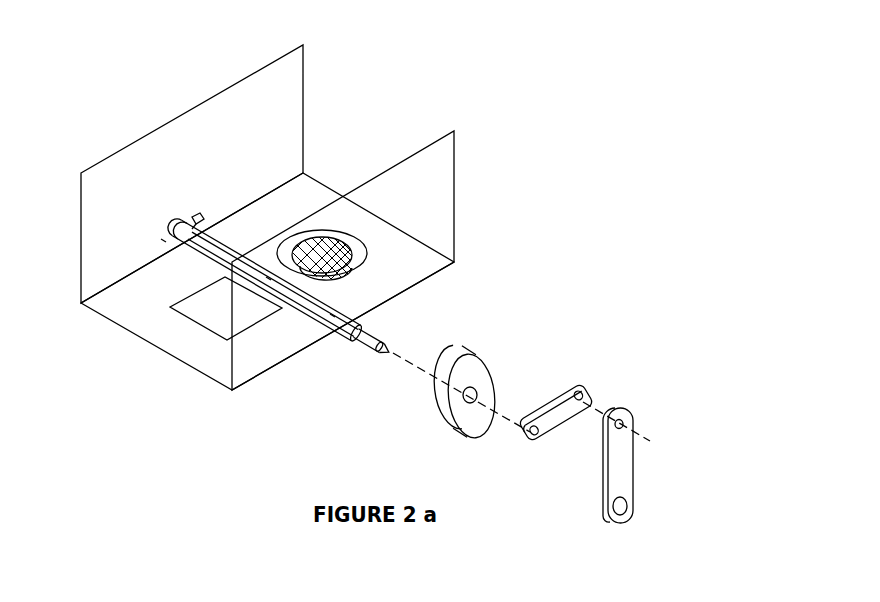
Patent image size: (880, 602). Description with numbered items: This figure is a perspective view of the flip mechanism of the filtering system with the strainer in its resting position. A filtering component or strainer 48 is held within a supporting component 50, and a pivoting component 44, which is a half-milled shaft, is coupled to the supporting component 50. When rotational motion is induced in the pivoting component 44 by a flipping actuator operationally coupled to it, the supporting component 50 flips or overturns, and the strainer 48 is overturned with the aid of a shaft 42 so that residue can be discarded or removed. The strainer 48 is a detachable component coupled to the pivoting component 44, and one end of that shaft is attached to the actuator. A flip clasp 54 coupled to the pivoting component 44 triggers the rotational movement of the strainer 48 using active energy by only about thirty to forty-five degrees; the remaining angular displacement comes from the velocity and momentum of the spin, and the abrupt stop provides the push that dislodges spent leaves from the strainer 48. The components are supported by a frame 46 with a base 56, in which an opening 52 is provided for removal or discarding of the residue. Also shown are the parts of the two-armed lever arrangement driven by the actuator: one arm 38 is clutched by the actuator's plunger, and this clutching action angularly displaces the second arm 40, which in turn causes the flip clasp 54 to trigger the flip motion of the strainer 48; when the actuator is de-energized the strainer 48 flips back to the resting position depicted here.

The arm 38 is at (684, 460).
The second arm 40 is at (621, 381).
The shaft 42 is at (525, 347).
The pivoting component 44 is at (372, 314).
The frame 46 is at (414, 260).
The strainer 48 is at (424, 192).
The supporting component 50 is at (406, 157).
The opening 52 is at (183, 355).
The flip clasp 54 is at (193, 119).
The base 56 is at (237, 217).